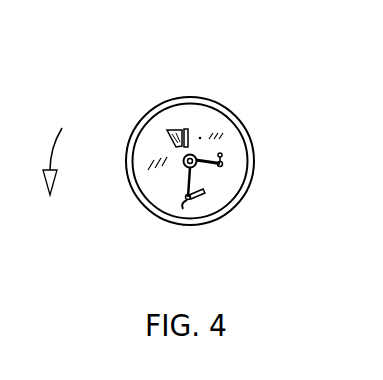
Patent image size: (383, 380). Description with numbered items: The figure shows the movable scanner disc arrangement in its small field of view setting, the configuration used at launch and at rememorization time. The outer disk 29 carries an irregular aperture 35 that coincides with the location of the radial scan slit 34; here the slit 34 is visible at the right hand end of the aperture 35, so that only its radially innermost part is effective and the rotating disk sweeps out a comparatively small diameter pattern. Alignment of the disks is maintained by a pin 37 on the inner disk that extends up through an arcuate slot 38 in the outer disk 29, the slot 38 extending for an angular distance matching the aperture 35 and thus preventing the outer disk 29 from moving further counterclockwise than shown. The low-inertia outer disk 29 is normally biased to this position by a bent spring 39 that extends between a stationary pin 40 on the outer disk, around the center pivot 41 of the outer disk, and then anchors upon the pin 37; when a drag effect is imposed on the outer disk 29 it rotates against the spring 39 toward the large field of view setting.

The outer disk 29 is at (247, 128).
The scan slit 34 is at (188, 147).
The aperture 35 is at (174, 133).
The pin 37 is at (183, 205).
The slot 38 is at (207, 200).
The spring 39 is at (183, 178).
The stationary pin 40 is at (222, 164).
The center pivot 41 is at (184, 158).